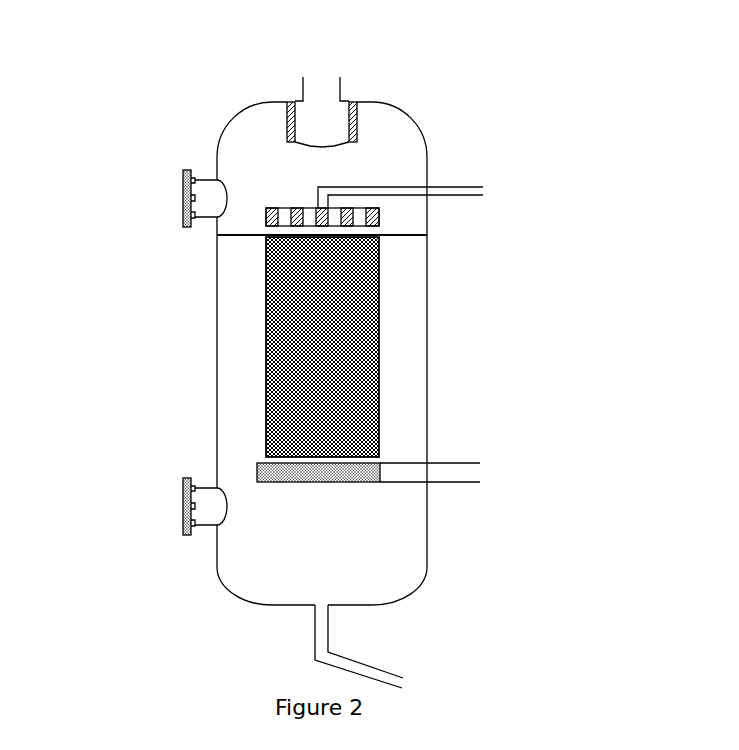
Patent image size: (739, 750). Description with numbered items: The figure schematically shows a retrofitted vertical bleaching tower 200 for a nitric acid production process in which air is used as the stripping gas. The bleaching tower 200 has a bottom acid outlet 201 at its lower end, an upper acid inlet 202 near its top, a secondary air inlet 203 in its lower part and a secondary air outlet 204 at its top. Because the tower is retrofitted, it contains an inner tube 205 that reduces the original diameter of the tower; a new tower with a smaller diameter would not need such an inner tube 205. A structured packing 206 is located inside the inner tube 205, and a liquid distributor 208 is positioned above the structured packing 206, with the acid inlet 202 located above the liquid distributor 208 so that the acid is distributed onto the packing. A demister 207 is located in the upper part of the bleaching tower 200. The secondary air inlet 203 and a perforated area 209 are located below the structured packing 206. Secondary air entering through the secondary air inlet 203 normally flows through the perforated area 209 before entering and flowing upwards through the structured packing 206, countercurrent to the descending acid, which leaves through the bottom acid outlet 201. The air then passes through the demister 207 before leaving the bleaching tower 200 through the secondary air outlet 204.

The bleaching tower 200 is at (190, 358).
The bottom acid outlet 201 is at (403, 678).
The upper acid inlet 202 is at (470, 170).
The secondary air inlet 203 is at (465, 470).
The secondary air outlet 204 is at (321, 77).
The inner tube 205 is at (379, 321).
The structured packing 206 is at (330, 388).
The demister 207 is at (357, 123).
The liquid distributor 208 is at (379, 220).
The perforated area 209 is at (315, 467).